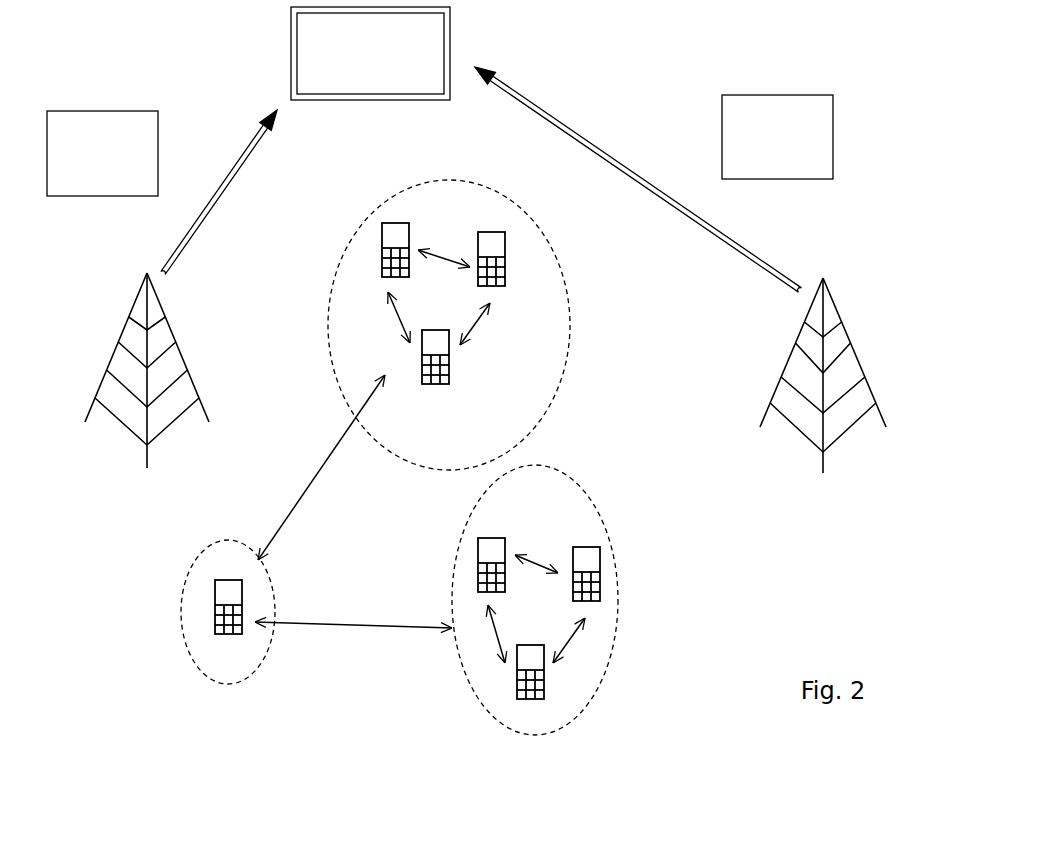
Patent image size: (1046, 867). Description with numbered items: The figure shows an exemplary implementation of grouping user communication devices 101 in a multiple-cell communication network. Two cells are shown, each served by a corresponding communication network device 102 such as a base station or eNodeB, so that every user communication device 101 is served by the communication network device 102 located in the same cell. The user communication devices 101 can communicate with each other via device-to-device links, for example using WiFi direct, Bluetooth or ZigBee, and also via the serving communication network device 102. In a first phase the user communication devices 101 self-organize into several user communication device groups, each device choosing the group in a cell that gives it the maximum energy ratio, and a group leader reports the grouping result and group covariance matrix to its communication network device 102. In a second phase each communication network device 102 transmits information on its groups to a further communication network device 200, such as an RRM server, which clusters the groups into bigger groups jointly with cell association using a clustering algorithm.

The further communication network device 200 is at (370, 53).
The communication network device 102 is at (125, 329).
The user communication device 101 is at (410, 221).